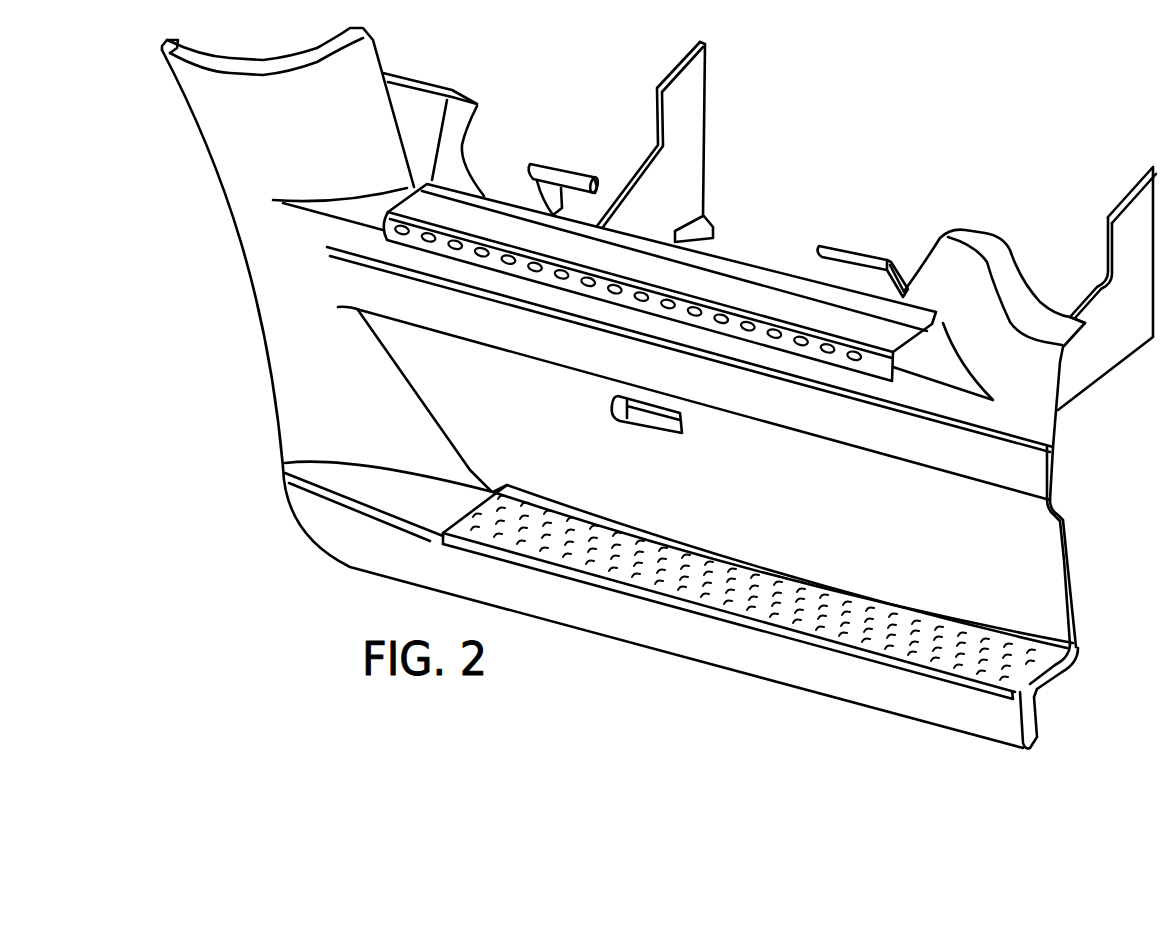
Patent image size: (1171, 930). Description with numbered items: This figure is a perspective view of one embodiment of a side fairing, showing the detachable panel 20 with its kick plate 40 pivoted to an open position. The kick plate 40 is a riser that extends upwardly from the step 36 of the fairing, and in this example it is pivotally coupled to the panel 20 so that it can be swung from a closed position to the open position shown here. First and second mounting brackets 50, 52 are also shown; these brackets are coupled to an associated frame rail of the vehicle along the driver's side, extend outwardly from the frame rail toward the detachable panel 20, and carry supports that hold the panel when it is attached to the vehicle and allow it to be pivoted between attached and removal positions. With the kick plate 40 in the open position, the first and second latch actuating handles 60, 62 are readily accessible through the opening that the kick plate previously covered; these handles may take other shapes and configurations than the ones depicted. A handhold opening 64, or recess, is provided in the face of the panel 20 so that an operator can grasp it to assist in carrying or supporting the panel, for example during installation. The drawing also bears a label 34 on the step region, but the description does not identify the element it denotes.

The detachable panel 20 is at (338, 570).
The step pad 34 is at (652, 582).
The step 36 is at (495, 250).
The kick plate 40 is at (745, 280).
The first mounting bracket 50 is at (690, 130).
The second mounting bracket 52 is at (1100, 220).
The first latch actuating handle 60 is at (567, 163).
The second latch actuating handle 62 is at (845, 247).
The handhold opening 64 is at (630, 432).